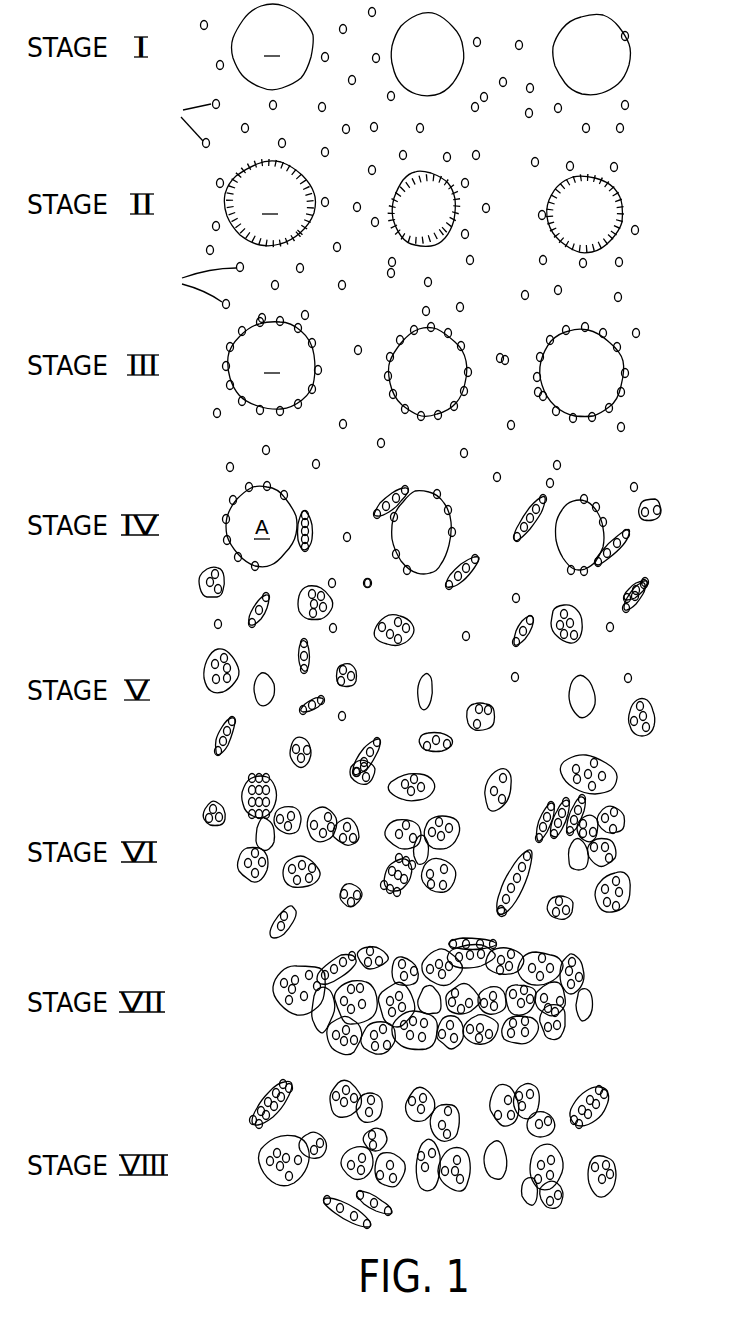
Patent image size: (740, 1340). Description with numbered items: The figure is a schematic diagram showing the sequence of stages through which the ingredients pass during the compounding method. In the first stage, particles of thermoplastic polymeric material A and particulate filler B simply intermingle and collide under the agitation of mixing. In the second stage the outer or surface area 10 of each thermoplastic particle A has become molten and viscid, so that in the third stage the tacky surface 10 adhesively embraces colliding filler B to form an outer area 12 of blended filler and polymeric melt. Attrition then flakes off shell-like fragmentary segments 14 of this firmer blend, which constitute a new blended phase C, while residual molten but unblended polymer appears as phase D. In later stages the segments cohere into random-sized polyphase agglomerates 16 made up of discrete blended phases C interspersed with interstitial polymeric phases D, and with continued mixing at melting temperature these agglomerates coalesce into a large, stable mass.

The outer or surface area 10 is at (225, 201).
The outer area of blended filler and polymeric melt 12 is at (228, 370).
The fragmentary segments of blended filler and polymeric melt 14 is at (380, 506).
The particulate cohesive bodies or agglomerates 16 is at (505, 876).
The thermoplastic polymeric material A is at (273, 47).
The particulate filler B is at (203, 202).
The blended phase C is at (213, 665).
The melted polymeric phase D is at (254, 696).